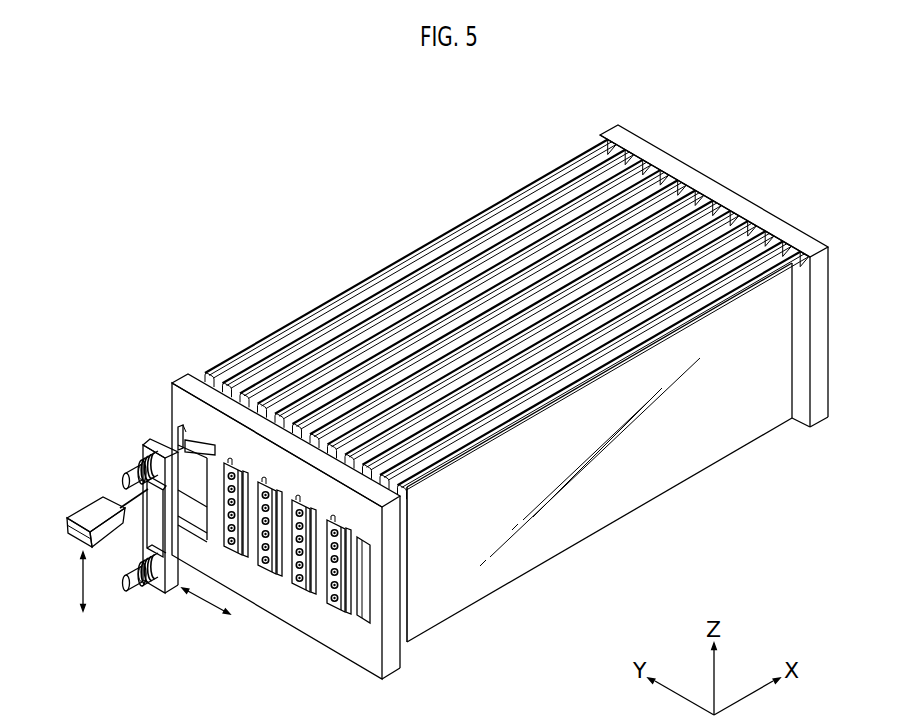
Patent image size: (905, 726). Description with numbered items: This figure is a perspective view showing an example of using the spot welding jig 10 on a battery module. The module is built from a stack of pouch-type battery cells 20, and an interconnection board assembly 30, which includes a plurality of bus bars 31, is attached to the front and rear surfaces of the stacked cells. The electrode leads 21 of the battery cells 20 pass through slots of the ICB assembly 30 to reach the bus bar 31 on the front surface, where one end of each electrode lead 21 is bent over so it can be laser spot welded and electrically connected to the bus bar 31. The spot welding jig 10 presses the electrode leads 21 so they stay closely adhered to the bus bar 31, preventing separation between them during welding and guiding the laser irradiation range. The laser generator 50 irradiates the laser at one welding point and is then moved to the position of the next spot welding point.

The spot welding jig 10 is at (135, 439).
The pouch-type battery cell 20 is at (608, 505).
The electrode lead 21 is at (328, 594).
The interconnection board (ICB) assembly 30 is at (192, 383).
The bus bar 31 is at (202, 437).
The laser generator 50 is at (86, 499).